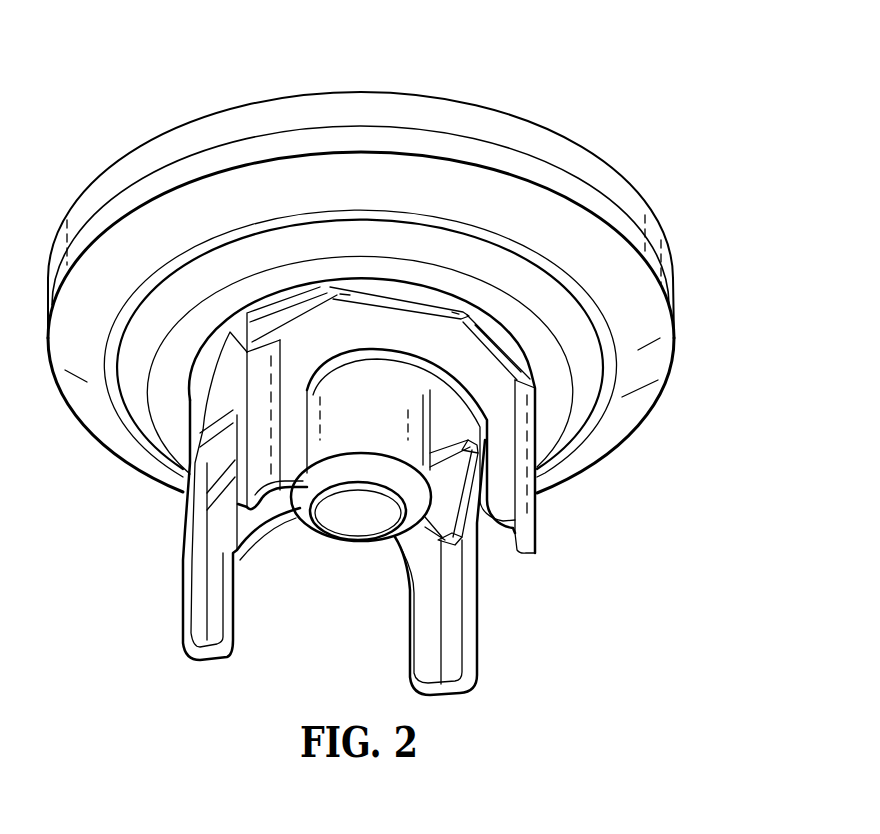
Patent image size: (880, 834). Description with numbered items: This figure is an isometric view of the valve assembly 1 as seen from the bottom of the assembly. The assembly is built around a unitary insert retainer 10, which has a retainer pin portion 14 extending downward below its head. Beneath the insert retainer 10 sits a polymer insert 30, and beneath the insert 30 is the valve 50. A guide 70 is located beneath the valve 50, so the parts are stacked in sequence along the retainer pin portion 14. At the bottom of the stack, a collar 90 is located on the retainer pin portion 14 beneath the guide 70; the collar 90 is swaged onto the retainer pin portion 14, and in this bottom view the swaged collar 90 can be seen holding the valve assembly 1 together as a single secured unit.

The valve assembly 1 is at (716, 187).
The insert retainer 10 is at (172, 128).
The retainer pin portion 14 is at (357, 523).
The polymer insert 30 is at (641, 410).
The valve 50 is at (565, 433).
The guide 70 is at (181, 560).
The collar 90 is at (278, 507).